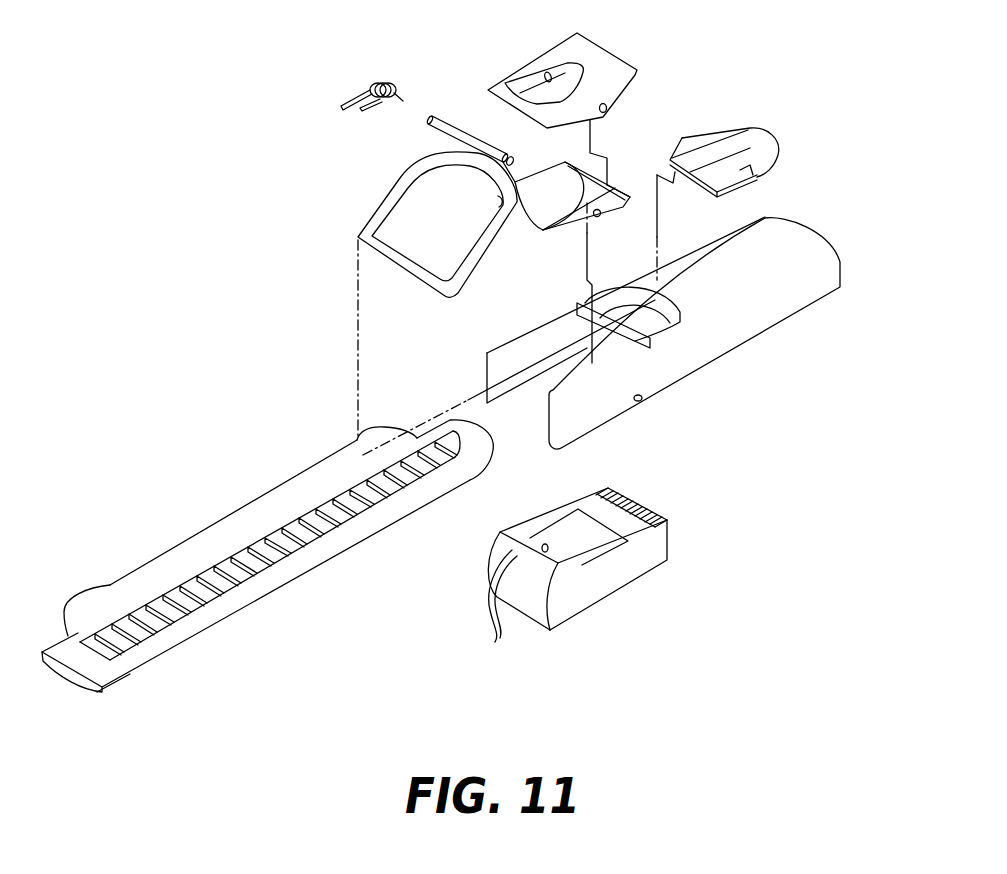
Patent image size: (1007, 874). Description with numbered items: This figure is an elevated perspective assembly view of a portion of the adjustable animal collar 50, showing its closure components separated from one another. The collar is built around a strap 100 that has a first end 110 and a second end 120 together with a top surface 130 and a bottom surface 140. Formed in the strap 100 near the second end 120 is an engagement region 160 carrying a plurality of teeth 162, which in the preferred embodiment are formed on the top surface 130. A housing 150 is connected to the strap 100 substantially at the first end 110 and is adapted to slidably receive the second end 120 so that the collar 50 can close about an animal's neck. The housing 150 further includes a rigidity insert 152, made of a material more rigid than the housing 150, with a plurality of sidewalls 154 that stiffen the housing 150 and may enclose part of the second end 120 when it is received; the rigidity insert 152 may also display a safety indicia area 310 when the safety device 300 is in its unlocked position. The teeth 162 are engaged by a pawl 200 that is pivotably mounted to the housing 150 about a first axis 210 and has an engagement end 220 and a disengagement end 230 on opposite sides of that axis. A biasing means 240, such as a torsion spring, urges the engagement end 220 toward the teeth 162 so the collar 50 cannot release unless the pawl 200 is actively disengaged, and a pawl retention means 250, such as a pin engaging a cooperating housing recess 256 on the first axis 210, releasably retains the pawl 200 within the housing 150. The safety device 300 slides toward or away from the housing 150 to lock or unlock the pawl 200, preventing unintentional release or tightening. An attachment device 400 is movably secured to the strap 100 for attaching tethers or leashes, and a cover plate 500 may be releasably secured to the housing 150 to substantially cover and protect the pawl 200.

The adjustable animal collar 50 is at (258, 237).
The strap 100 is at (233, 425).
The first end 110 is at (478, 373).
The second end 120 is at (423, 420).
The top surface 130 is at (128, 660).
The bottom surface 140 is at (92, 697).
The housing 150 is at (723, 447).
The rigidity insert 152 is at (659, 589).
The sidewalls 154 is at (505, 632).
The engagement region 160 is at (234, 498).
The teeth 162 is at (243, 583).
The pawl 200 is at (658, 237).
The first axis 210 is at (405, 99).
The engagement end 220 is at (618, 178).
The disengagement end 230 is at (527, 240).
The biasing means 240 is at (367, 87).
The pawl retention means 250 is at (428, 120).
The cooperating housing recess 256 is at (544, 546).
The safety device 300 is at (785, 150).
The safety indicia area 310 is at (648, 510).
The attachment device 400 is at (381, 208).
The cover plate 500 is at (622, 58).